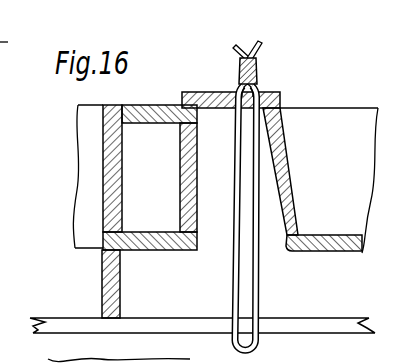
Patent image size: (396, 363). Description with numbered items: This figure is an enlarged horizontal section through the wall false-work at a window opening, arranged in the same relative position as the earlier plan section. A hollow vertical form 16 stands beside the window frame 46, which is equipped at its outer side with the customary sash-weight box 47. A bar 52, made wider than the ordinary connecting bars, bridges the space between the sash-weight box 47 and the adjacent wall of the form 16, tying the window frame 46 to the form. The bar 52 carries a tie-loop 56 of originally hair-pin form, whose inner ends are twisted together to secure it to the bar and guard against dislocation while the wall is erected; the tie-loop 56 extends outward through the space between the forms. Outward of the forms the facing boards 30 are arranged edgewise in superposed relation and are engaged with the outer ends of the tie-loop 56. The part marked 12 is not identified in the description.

The frame 12 is at (111, 357).
The form 16 is at (320, 180).
The board 30 is at (175, 326).
The window frame 46 is at (90, 190).
The sash-weight box 47 is at (152, 105).
The bar 52 is at (206, 92).
The tie-loop 56 is at (255, 312).